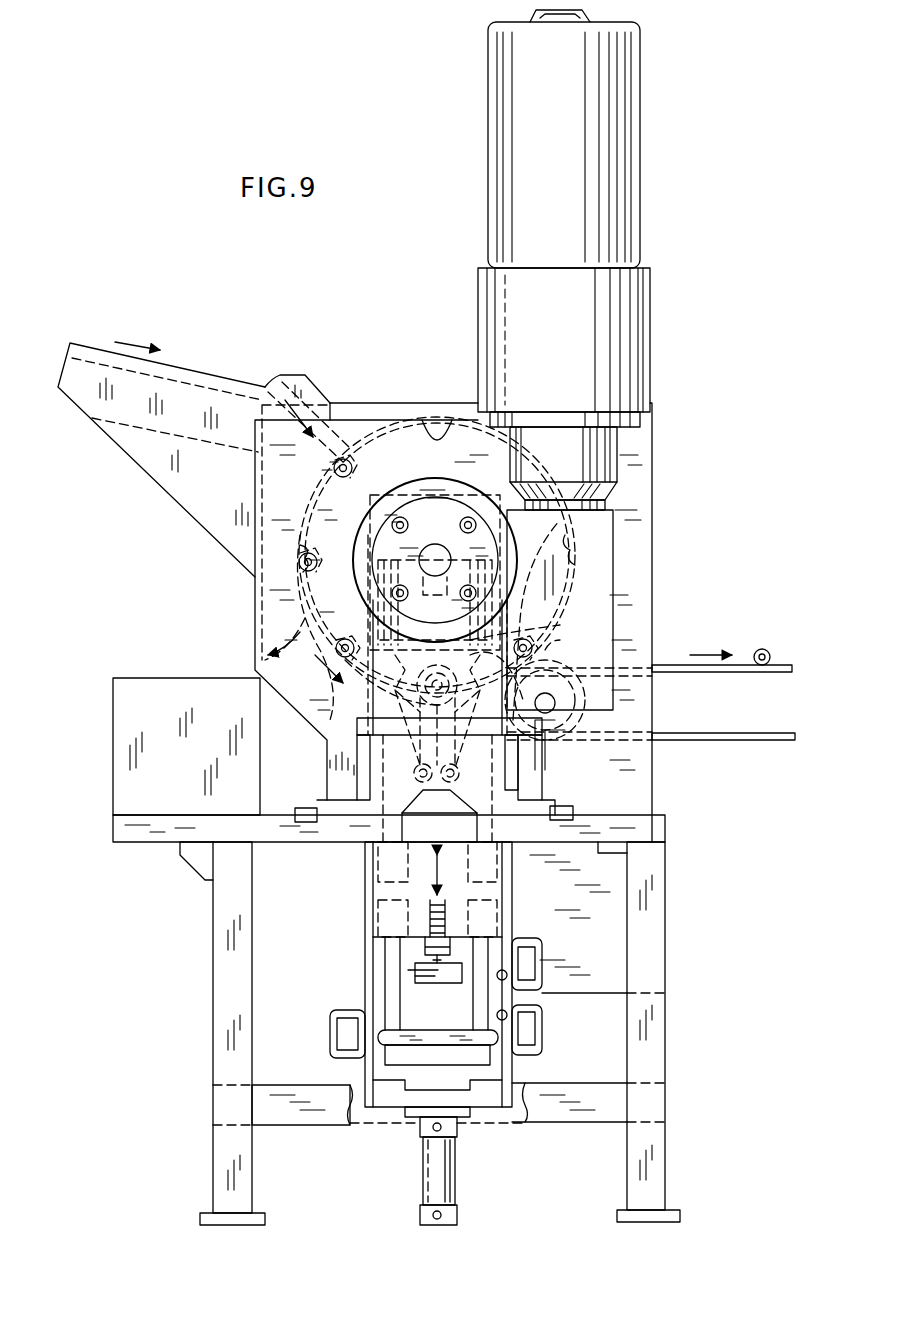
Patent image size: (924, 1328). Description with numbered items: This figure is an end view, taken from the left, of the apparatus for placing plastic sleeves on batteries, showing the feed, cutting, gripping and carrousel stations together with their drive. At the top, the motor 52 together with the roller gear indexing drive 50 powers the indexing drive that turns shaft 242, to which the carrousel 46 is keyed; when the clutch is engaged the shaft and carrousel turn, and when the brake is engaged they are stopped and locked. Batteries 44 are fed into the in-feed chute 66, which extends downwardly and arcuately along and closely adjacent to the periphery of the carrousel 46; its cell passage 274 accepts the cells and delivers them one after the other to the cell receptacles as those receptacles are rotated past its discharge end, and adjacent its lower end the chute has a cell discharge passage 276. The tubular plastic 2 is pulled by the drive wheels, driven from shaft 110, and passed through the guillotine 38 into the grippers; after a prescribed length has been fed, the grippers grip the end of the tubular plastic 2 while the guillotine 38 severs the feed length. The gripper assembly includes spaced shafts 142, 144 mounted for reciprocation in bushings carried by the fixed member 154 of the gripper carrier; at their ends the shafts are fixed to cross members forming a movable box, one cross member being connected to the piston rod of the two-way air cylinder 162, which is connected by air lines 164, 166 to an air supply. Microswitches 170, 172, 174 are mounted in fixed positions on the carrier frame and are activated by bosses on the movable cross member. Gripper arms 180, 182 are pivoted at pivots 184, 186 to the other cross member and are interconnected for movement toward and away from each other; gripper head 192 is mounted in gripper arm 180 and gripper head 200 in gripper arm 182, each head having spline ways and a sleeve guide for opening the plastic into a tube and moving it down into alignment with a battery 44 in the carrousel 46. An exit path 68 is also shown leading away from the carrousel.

The motor 52 is at (497, 93).
The in-feed chute 66 is at (82, 350).
The cell passage 274 is at (280, 393).
The carrousel 46 is at (392, 428).
The battery 44 is at (334, 470).
The shaft 242 is at (437, 555).
The roller gear indexing drive 50 is at (652, 535).
The cell discharge passage 276 is at (300, 625).
The gripper head 192 is at (372, 655).
The guillotine 38 is at (492, 625).
The tubular plastic 2 is at (545, 642).
The gripper head 200 is at (533, 648).
The exit conveyor 68 is at (783, 667).
The gripper arm 180 is at (395, 712).
The gripper arm 182 is at (520, 727).
The pivot 184 is at (420, 773).
The pivot 186 is at (453, 775).
The shaft 110 is at (655, 826).
The fixed member 154 is at (420, 892).
The microswitch 172 is at (540, 955).
The shaft 142 is at (392, 975).
The shaft 144 is at (487, 1003).
The microswitch 170 is at (335, 1032).
The microswitch 174 is at (540, 1032).
The air line 164 is at (435, 1128).
The two-way air cylinder 162 is at (445, 1172).
The air line 166 is at (437, 1215).